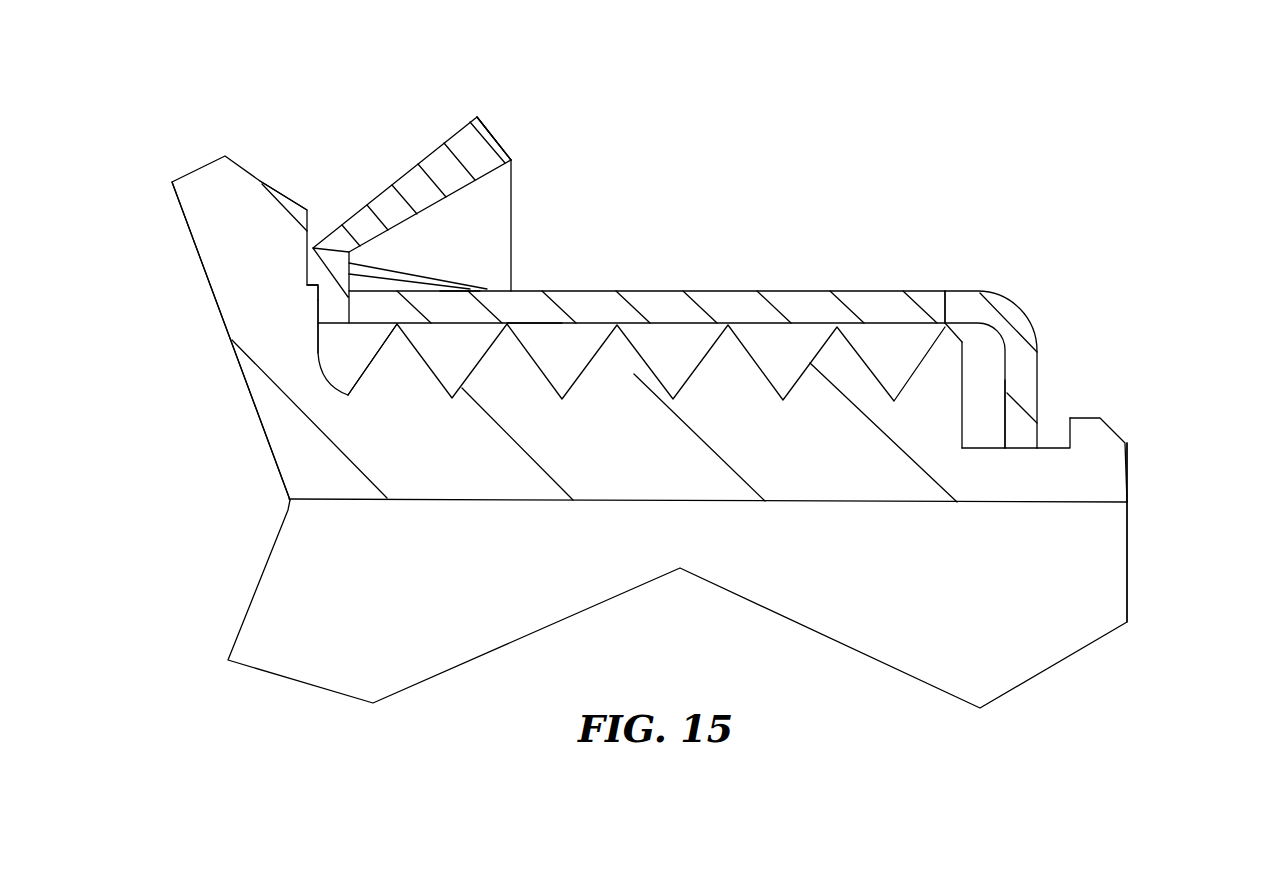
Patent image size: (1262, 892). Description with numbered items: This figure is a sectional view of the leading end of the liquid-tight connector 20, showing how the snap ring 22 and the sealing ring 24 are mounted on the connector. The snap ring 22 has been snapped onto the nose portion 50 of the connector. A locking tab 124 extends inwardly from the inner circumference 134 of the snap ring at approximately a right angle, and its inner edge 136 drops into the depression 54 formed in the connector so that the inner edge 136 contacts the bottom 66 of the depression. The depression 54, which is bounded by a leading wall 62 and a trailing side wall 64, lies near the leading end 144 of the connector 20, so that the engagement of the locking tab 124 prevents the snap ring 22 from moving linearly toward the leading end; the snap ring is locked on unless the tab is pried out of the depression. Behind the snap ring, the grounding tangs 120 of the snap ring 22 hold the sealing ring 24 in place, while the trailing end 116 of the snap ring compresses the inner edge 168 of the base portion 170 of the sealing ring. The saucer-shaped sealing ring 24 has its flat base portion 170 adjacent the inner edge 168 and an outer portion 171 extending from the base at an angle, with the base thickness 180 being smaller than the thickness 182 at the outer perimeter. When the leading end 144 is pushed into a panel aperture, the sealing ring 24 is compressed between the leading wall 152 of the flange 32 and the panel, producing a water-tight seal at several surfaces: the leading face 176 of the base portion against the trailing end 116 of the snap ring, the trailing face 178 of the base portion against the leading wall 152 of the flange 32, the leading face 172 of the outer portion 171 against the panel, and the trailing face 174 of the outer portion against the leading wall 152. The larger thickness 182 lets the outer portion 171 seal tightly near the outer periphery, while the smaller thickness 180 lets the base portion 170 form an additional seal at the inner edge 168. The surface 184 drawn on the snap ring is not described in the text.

The connector 20 is at (855, 183).
The snap ring 22 is at (646, 389).
The sealing ring 24 is at (451, 139).
The flange 32 is at (259, 291).
The nose portion 50 is at (791, 483).
The depression 54 is at (1047, 452).
The leading wall 62 is at (1062, 430).
The trailing side wall 64 is at (977, 425).
The bottom 66 is at (993, 437).
The trailing end 116 is at (351, 301).
The grounding tangs 120 is at (400, 270).
The locking tab 124 is at (1027, 397).
The inner circumference 134 is at (537, 330).
The inner edge 136 is at (1028, 455).
The leading end 144 is at (1128, 462).
The leading wall 152 is at (311, 222).
The inner edge 168 is at (320, 337).
The base portion 170 is at (328, 300).
The outer portion 171 is at (462, 148).
The leading sealing face 172 is at (482, 213).
The trailing sealing face 174 is at (428, 153).
The leading sealing face 176 is at (349, 296).
The trailing sealing face 178 is at (308, 303).
The base thickness 180 is at (340, 243).
The outer perimeter thickness 182 is at (477, 115).
The top surface 184 is at (456, 290).